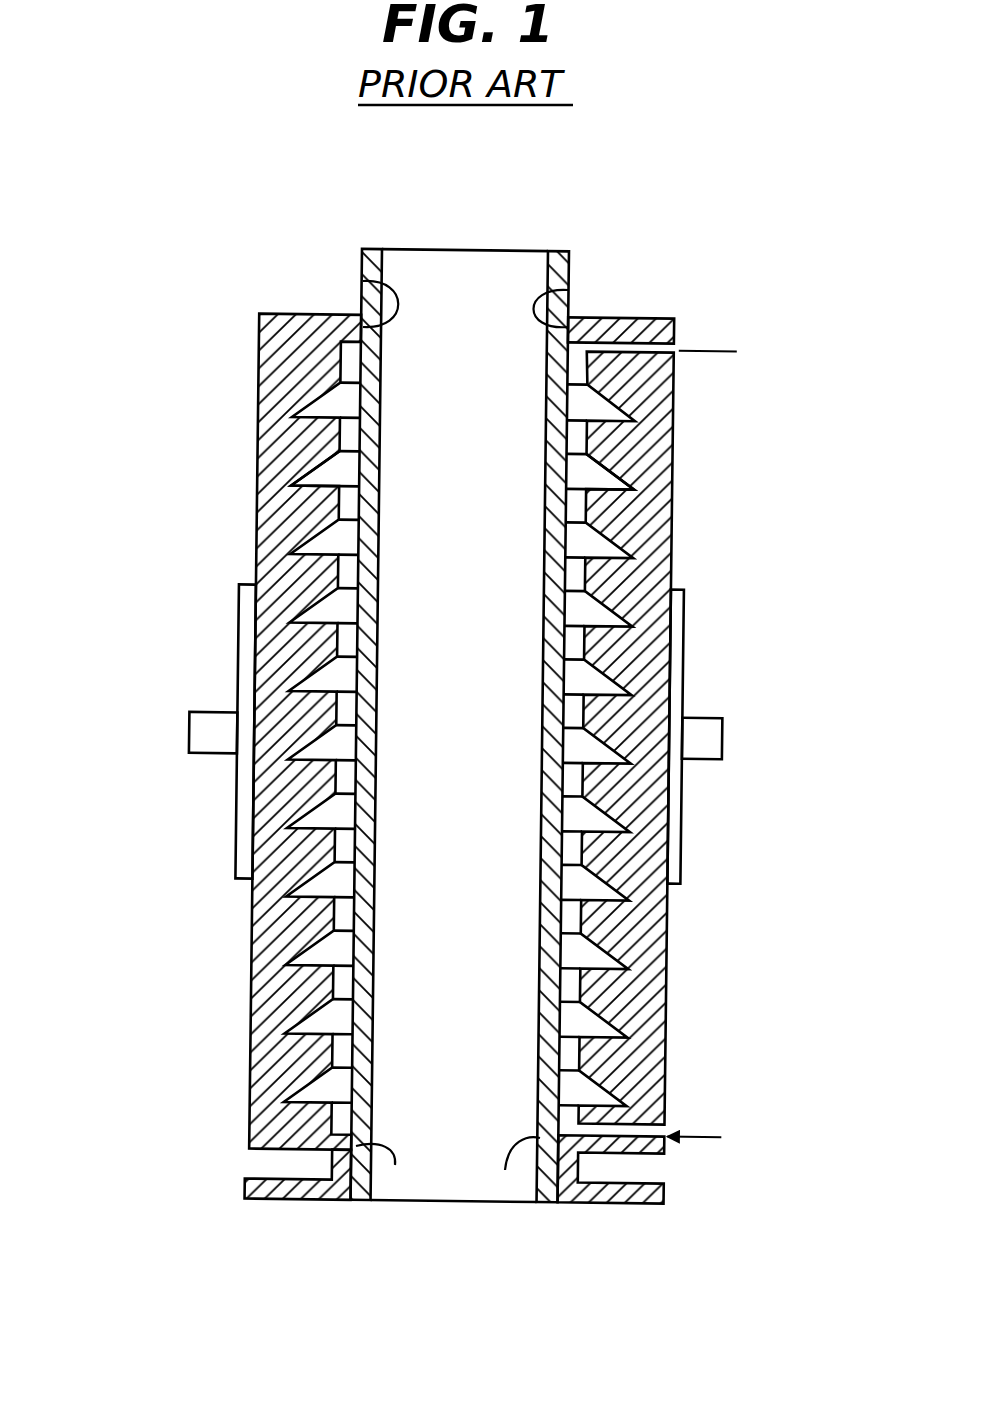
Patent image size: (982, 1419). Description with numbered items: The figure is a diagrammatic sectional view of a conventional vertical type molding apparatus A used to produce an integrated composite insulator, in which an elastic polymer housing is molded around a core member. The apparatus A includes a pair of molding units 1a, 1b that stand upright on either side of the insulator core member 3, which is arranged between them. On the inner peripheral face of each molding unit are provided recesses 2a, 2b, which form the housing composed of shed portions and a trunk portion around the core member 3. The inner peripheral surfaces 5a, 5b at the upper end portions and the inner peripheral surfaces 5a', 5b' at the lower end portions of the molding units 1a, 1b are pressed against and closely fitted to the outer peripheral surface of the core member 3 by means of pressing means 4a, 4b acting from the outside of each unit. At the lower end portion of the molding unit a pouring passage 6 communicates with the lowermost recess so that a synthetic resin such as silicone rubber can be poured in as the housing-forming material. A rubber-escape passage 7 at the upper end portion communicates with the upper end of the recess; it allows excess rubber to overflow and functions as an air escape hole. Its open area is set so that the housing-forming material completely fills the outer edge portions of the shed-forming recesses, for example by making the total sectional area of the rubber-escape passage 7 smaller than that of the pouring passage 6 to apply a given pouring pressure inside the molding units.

The molding unit 1a is at (265, 397).
The molding unit 1b is at (667, 400).
The recess 2a is at (322, 478).
The recess 2b is at (347, 502).
The insulator core member 3 is at (556, 252).
The pressing means 4a is at (180, 733).
The pressing means 4b is at (742, 741).
The inner peripheral surface 5a is at (342, 287).
The inner peripheral surface 5b is at (581, 289).
The inner peripheral surface 5a' is at (387, 1206).
The inner peripheral surface 5b' is at (510, 1203).
The pouring passage 6 is at (641, 1138).
The rubber-escape passage 7 is at (660, 317).
The vertical type molding apparatus A is at (694, 558).